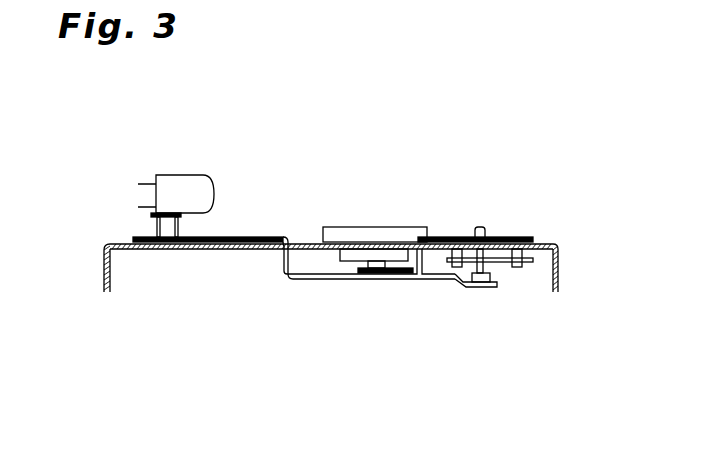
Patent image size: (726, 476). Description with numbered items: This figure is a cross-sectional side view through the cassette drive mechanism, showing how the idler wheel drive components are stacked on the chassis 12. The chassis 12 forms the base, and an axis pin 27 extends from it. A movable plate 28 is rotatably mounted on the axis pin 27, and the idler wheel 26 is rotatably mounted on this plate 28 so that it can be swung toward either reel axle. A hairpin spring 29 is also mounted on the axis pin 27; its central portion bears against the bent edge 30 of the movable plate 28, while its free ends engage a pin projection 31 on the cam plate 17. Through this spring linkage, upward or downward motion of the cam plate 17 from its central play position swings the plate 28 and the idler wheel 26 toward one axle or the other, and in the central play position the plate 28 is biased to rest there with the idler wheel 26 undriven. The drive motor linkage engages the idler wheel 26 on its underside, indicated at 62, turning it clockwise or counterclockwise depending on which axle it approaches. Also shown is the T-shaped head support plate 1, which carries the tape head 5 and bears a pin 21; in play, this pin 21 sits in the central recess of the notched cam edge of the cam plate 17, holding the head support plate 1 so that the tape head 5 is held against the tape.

The T-shaped head support plate 1 is at (259, 236).
The tape head 5 is at (193, 185).
The chassis 12 is at (110, 273).
The cam plate 17 is at (521, 236).
The pin 21 is at (478, 282).
The idler wheel 26 is at (355, 227).
The axis pin 27 is at (457, 268).
The movable plate 28 is at (387, 273).
The hairpin spring 29 is at (533, 260).
The bent edge 30 is at (497, 286).
The pin projection 31 is at (518, 268).
The underside drive location 62 is at (332, 254).